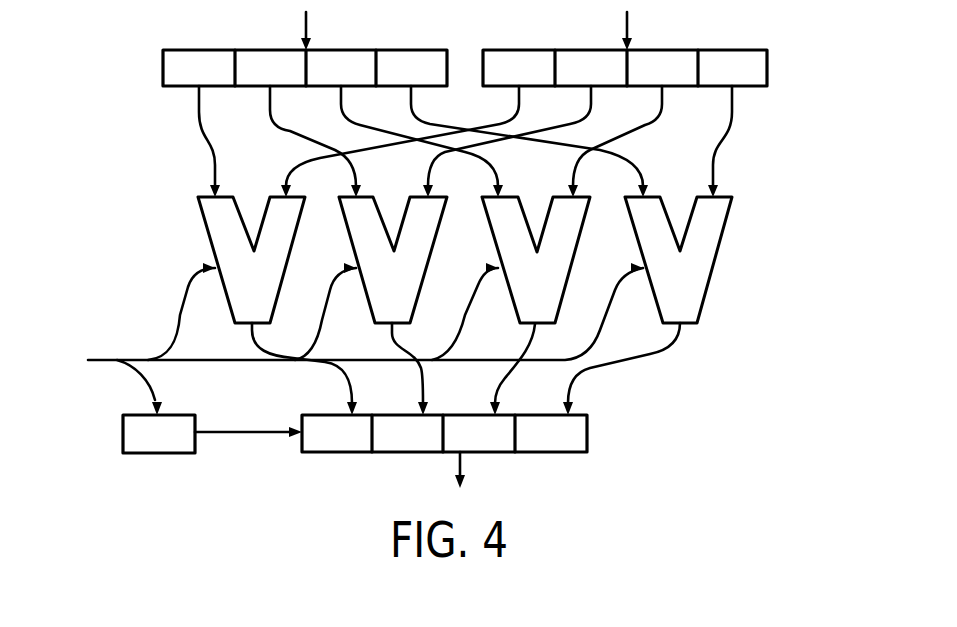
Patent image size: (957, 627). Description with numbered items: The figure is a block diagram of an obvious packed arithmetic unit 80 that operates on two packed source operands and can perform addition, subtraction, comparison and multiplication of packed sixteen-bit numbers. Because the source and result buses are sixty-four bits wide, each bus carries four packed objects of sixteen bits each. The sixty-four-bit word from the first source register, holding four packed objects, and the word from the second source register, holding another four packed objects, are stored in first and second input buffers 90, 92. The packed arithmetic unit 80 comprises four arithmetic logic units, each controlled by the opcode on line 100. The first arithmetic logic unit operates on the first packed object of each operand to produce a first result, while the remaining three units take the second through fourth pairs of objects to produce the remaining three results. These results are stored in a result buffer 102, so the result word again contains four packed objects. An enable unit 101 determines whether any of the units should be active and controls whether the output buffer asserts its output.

The obvious packed arithmetic unit 80 is at (683, 370).
The first input buffer 90 is at (732, 48).
The second input buffer 92 is at (410, 48).
The opcode line 100 is at (110, 362).
The enable unit 101 is at (183, 453).
The result buffer 102 is at (588, 435).